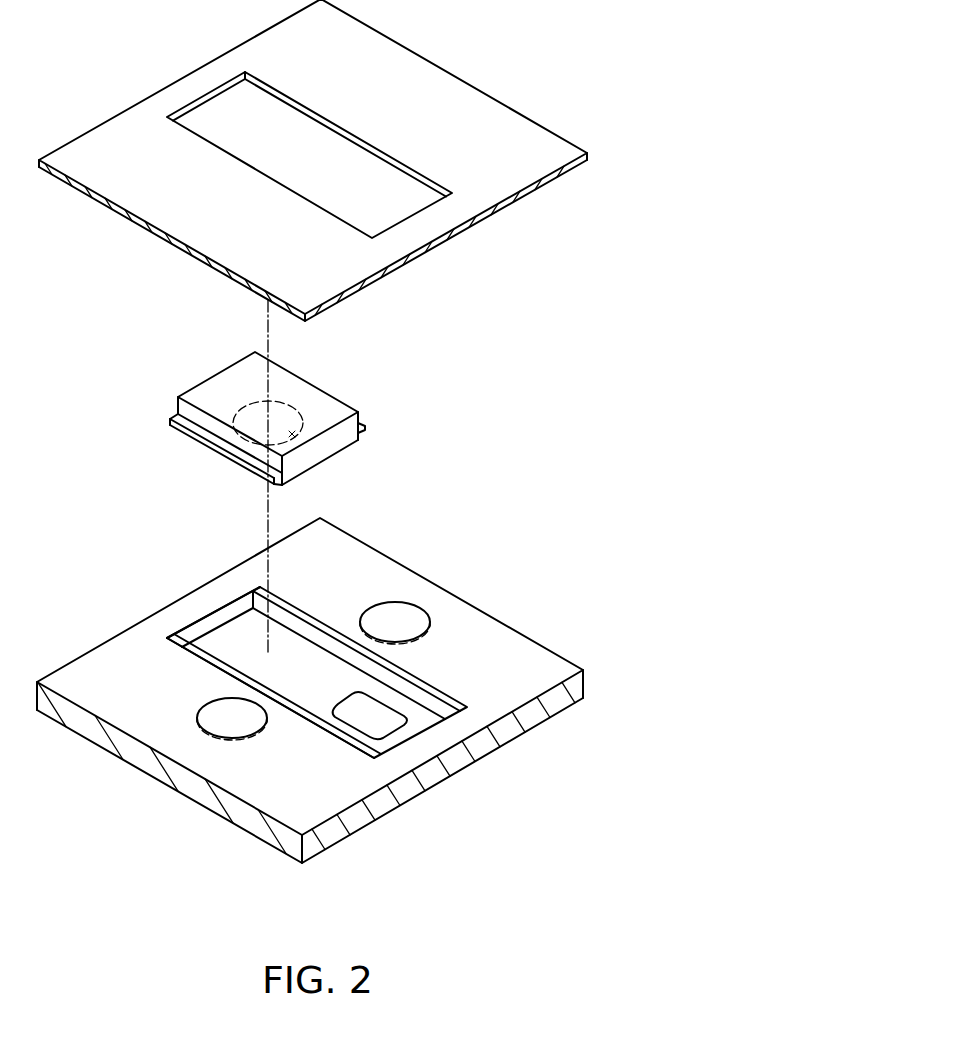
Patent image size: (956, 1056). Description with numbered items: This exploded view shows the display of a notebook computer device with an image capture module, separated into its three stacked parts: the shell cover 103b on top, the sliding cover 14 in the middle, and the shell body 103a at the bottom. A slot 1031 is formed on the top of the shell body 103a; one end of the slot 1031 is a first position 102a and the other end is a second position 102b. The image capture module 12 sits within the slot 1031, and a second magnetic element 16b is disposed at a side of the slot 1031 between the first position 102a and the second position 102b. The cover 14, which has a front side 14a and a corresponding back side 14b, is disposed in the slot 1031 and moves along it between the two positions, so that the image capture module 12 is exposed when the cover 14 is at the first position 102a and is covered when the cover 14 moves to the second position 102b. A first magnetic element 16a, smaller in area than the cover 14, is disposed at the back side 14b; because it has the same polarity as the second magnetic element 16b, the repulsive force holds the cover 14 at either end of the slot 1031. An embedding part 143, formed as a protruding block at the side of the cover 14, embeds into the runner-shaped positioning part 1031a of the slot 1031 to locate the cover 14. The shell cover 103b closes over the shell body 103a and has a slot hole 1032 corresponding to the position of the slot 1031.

The shell cover 103b is at (318, 160).
The slot hole 1032 is at (407, 207).
The cover 14 is at (295, 422).
The front side 14a is at (290, 392).
The back side 14b is at (313, 470).
The embedding part 143 is at (213, 448).
The first magnetic element 16a is at (300, 443).
The shell body 103a is at (340, 713).
The slot 1031 is at (350, 748).
The positioning part 1031a is at (438, 700).
The second magnetic element 16b is at (405, 617).
The image capture module 12 is at (385, 720).
The first position 102a is at (205, 663).
The second position 102b is at (318, 730).